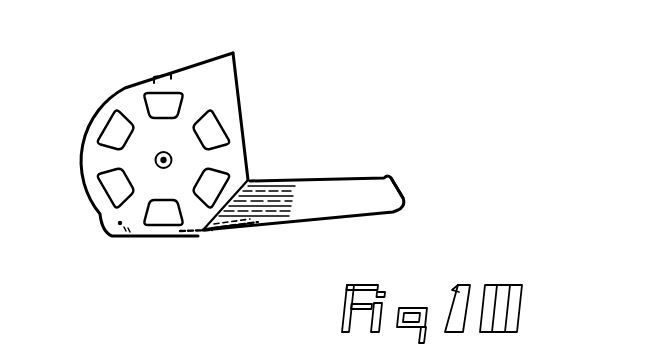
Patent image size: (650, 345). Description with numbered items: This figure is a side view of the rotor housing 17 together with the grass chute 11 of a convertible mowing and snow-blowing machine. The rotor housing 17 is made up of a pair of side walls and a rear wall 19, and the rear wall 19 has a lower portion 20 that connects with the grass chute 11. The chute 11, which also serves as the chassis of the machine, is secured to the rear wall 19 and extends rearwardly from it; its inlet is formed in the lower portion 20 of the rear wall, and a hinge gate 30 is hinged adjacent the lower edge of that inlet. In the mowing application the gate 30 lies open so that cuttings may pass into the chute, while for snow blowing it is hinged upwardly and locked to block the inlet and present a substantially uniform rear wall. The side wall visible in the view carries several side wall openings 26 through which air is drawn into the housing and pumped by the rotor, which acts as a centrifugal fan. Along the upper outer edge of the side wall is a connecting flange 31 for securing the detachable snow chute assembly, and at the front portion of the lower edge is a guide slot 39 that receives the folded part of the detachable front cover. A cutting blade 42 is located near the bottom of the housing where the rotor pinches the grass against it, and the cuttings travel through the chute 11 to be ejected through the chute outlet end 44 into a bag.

The rotor housing 17 is at (128, 67).
The connecting flanges 31 is at (160, 72).
The rear wall 19 is at (241, 103).
The chute outlet end 44 is at (398, 188).
The grass chute 11 is at (320, 213).
The lower portion of the rear wall 20 is at (246, 225).
The hinge gate 30 is at (222, 229).
The cutting blade 42 is at (175, 237).
The guide slots 39 is at (113, 237).
The side wall openings 26 is at (117, 190).